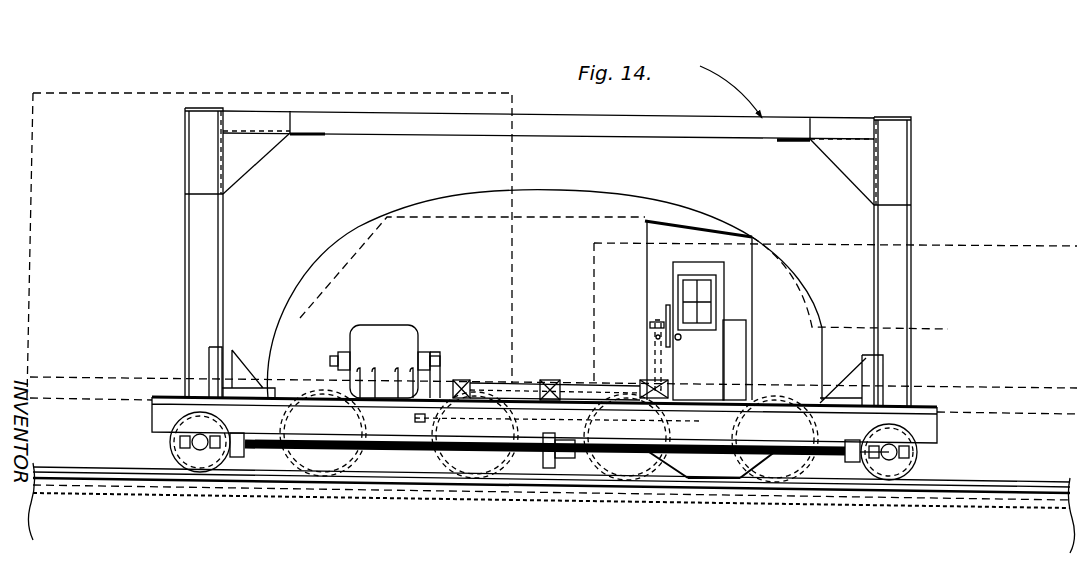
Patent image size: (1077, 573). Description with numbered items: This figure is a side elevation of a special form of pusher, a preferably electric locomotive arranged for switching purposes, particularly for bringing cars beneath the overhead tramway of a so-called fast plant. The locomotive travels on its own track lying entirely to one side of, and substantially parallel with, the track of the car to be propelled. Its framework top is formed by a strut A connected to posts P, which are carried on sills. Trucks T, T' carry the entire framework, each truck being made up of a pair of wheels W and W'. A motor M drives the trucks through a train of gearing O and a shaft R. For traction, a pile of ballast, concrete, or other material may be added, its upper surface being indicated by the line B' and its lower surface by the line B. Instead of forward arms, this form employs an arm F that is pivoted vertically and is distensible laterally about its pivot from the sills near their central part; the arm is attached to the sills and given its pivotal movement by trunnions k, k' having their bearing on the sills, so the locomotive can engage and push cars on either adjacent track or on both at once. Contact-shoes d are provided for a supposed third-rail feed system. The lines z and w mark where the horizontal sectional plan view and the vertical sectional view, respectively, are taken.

The strut A is at (462, 125).
The lower surface line of ballast B is at (544, 284).
The upper surface line of ballast B' is at (684, 154).
The post P is at (200, 260).
The motor M is at (385, 361).
The trunnion k is at (463, 374).
The trunnion k' is at (644, 359).
The arm F is at (547, 380).
The train of gearing O is at (412, 420).
The wheel W is at (176, 442).
The wheel W' is at (913, 452).
The truck T is at (207, 483).
The truck T' is at (869, 490).
The shaft R is at (388, 456).
The contact-shoe d is at (707, 483).
The section line w is at (757, 520).
The section line z is at (290, 320).